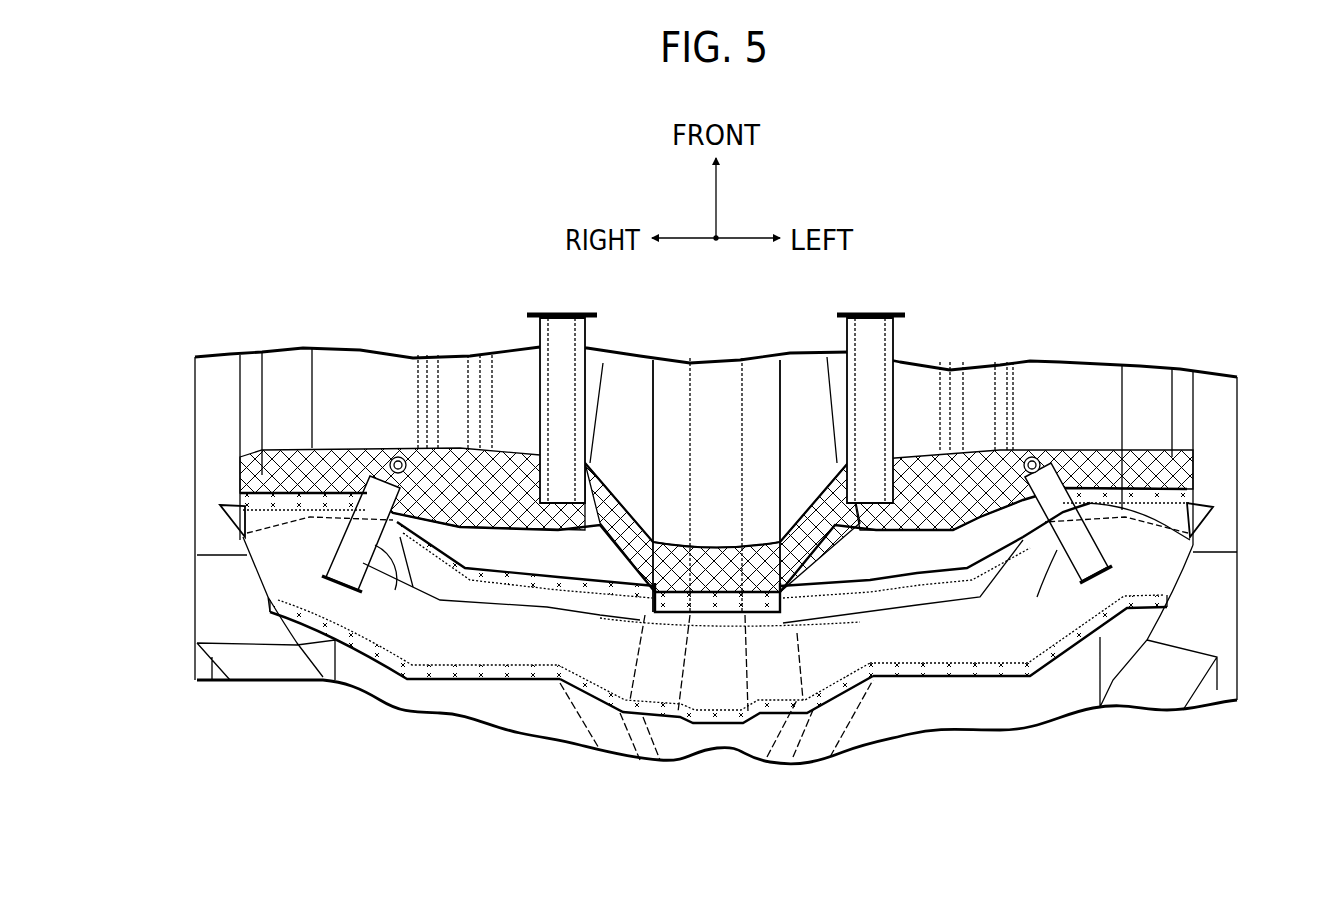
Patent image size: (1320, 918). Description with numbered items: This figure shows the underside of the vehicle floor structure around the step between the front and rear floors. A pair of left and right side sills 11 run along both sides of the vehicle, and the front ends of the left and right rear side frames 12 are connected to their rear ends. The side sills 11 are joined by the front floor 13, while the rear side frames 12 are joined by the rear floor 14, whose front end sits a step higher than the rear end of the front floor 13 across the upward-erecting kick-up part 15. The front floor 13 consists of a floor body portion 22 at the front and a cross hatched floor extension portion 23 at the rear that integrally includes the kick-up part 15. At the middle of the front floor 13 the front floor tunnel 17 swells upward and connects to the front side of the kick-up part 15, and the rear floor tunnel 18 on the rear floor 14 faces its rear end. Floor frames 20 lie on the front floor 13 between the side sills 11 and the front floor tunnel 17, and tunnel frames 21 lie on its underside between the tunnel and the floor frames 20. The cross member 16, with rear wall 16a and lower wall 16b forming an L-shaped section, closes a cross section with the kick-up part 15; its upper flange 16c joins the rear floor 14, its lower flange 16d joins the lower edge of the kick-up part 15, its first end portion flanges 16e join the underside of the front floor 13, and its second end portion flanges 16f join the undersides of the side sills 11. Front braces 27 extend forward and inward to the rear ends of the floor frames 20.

The side sill 11 is at (205, 408).
The rear side frame 12 is at (270, 672).
The front floor 13 is at (1033, 296).
The rear floor 14 is at (903, 720).
The kick-up part 15 is at (813, 533).
The cross member 16 is at (540, 684).
The rear wall 16a is at (950, 640).
The lower wall 16b is at (912, 597).
The upper flange 16c is at (455, 680).
The lower flange 16d is at (525, 582).
The first end portion flange 16e is at (292, 513).
The second end portion flange 16f is at (225, 517).
The front floor tunnel 17 is at (690, 353).
The rear floor tunnel 18 is at (750, 752).
The floor frame 20 is at (415, 403).
The tunnel frame 21 is at (557, 377).
The floor body portion 22 is at (1063, 385).
The floor extension portion 23 is at (1100, 463).
The front brace 27 is at (405, 540).